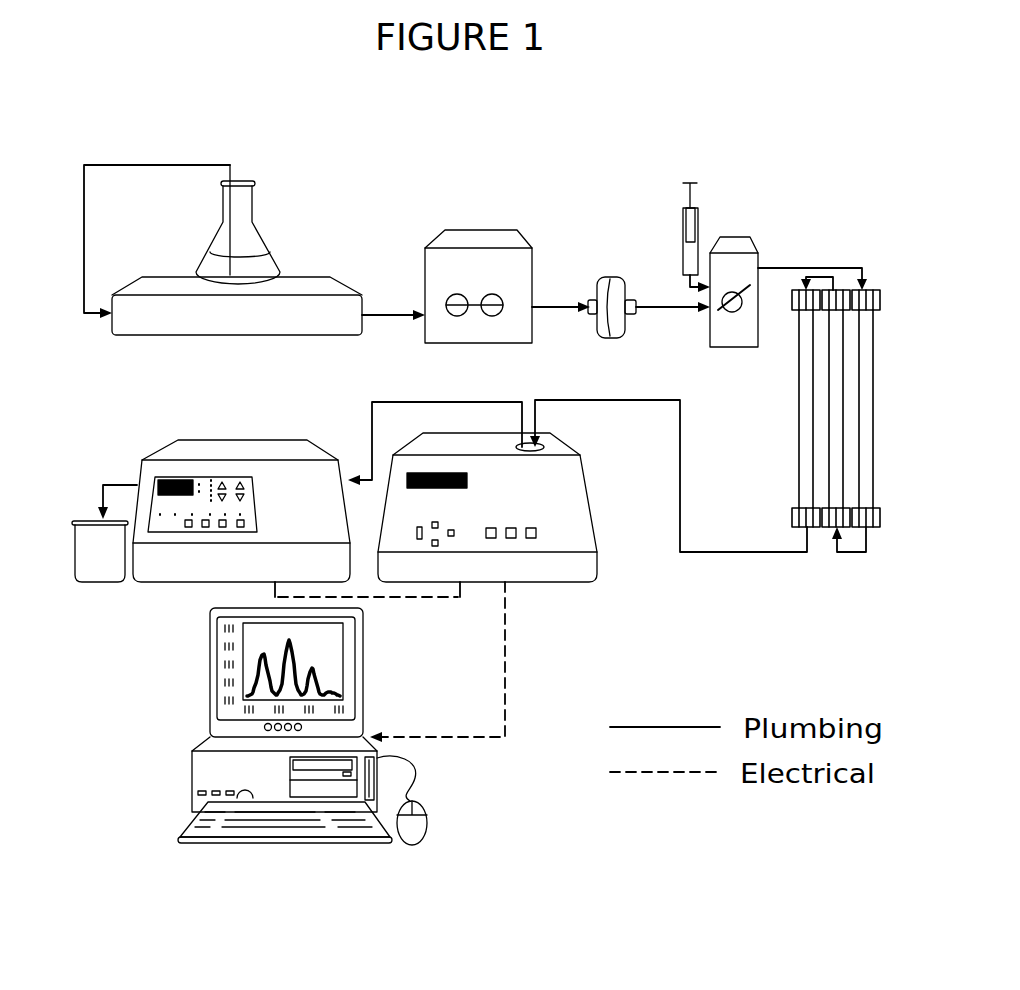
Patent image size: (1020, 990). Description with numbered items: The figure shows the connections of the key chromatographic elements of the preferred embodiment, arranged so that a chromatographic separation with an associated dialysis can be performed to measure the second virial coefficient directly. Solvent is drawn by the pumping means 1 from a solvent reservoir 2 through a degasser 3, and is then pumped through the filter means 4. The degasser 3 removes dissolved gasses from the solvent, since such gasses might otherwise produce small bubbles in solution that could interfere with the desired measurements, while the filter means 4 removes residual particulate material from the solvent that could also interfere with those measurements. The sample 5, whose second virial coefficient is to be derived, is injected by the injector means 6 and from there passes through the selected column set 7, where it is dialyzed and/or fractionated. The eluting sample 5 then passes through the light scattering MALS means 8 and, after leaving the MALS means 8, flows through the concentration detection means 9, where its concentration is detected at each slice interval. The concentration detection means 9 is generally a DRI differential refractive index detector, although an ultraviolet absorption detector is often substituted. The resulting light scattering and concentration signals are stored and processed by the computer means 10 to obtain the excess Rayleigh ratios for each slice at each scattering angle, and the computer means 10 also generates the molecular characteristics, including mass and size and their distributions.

The pumping means 1 is at (453, 223).
The solvent reservoir 2 is at (273, 252).
The degasser 3 is at (300, 343).
The filter means 4 is at (597, 347).
The sample 5 is at (680, 217).
The injector means 6 is at (767, 252).
The column set 7 is at (880, 335).
The light scattering MALS means 8 is at (590, 480).
The concentration detection means 9 is at (165, 442).
The computer means 10 is at (190, 766).